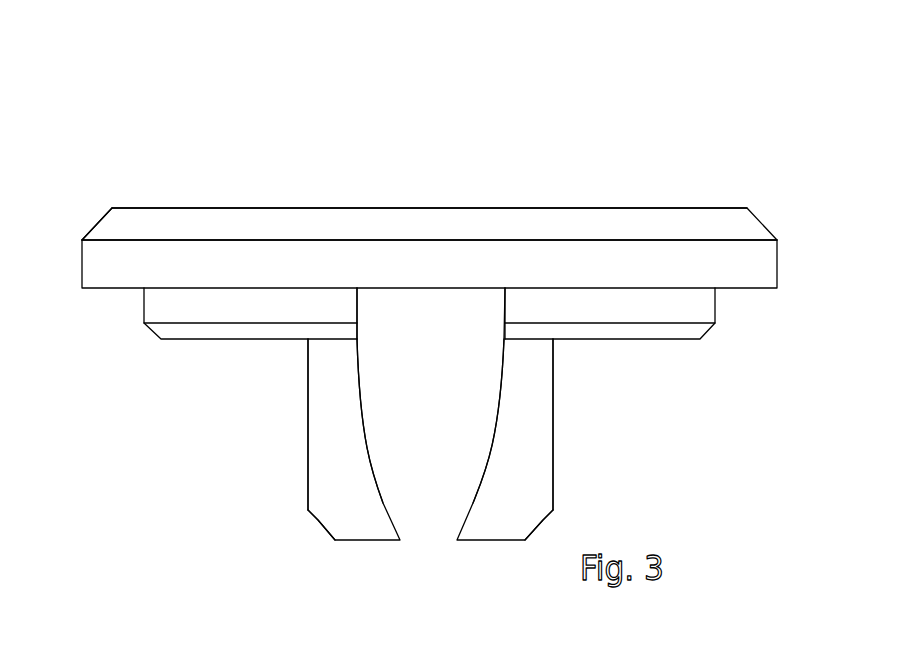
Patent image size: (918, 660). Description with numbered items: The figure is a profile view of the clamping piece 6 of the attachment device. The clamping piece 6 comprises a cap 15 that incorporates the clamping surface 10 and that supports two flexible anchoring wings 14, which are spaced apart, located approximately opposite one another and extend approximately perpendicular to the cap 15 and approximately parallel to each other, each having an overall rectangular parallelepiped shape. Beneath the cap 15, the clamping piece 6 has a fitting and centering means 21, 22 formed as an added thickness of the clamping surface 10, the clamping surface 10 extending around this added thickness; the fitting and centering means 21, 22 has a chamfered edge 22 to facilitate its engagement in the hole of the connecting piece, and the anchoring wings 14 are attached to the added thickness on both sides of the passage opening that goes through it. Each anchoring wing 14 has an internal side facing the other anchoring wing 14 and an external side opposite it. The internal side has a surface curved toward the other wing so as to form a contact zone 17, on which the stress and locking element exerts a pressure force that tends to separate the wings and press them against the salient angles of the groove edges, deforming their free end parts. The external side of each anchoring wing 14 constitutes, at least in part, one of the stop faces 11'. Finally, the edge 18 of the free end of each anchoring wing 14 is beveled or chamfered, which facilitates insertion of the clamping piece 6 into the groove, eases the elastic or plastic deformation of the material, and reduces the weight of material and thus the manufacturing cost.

The clamping piece 6 is at (205, 185).
The clamping surface 10 is at (122, 286).
The cap 15 is at (553, 208).
The contact zone 17 is at (473, 510).
The fitting and centering means 21 is at (223, 302).
The chamfered edge of the fitting and centering means 22 is at (615, 335).
The anchoring wing 14 is at (325, 422).
The stop face 11' is at (439, 424).
The beveled edge 18 is at (317, 518).